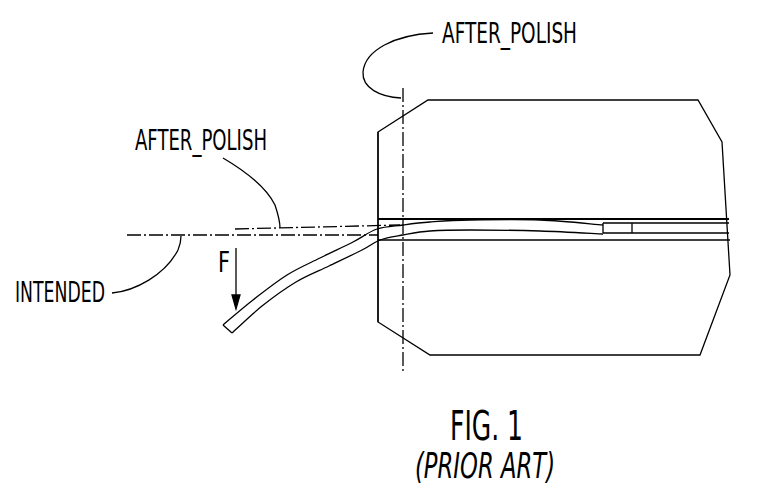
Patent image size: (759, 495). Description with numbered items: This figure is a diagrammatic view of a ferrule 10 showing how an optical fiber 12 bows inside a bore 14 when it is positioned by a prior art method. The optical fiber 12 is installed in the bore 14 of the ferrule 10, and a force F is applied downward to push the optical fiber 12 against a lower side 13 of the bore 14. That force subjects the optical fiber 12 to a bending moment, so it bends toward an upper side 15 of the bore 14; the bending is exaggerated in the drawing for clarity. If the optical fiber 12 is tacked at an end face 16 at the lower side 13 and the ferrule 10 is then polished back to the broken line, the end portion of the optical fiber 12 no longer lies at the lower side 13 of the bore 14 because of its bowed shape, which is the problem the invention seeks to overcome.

The ferrule 10 is at (626, 112).
The optical fiber 12 is at (238, 331).
The lower side 13 is at (396, 237).
The bore 14 is at (617, 218).
The upper side 15 is at (391, 219).
The end face 16 is at (378, 300).